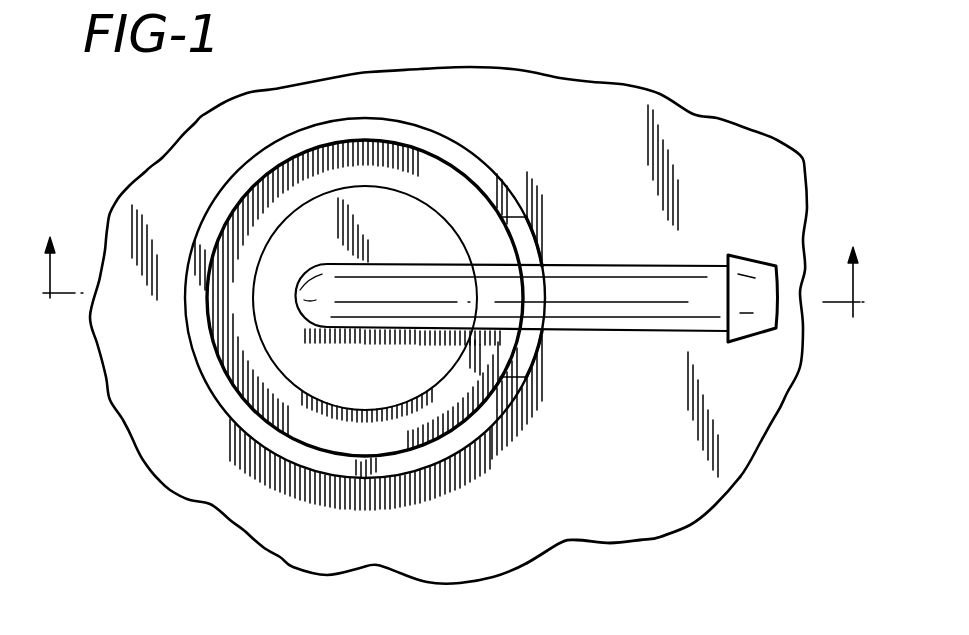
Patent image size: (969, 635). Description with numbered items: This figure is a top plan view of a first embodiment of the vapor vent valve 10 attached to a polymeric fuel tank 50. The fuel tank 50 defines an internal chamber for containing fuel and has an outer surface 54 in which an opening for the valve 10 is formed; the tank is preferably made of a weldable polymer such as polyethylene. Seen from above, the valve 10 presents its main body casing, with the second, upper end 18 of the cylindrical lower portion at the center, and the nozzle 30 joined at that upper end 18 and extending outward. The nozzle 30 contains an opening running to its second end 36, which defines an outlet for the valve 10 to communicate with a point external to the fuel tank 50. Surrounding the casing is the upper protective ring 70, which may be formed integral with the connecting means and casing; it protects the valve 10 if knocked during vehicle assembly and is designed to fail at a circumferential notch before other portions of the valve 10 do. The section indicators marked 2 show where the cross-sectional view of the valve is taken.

The vapor vent valve 10 is at (246, 441).
The second, upper end 18 is at (275, 315).
The nozzle 30 is at (621, 273).
The second end 36 is at (760, 335).
The polymeric fuel tank 50 is at (628, 491).
The outer surface 54 is at (570, 525).
The upper protective ring 70 is at (368, 125).
The section line 2- 2 is at (453, 288).